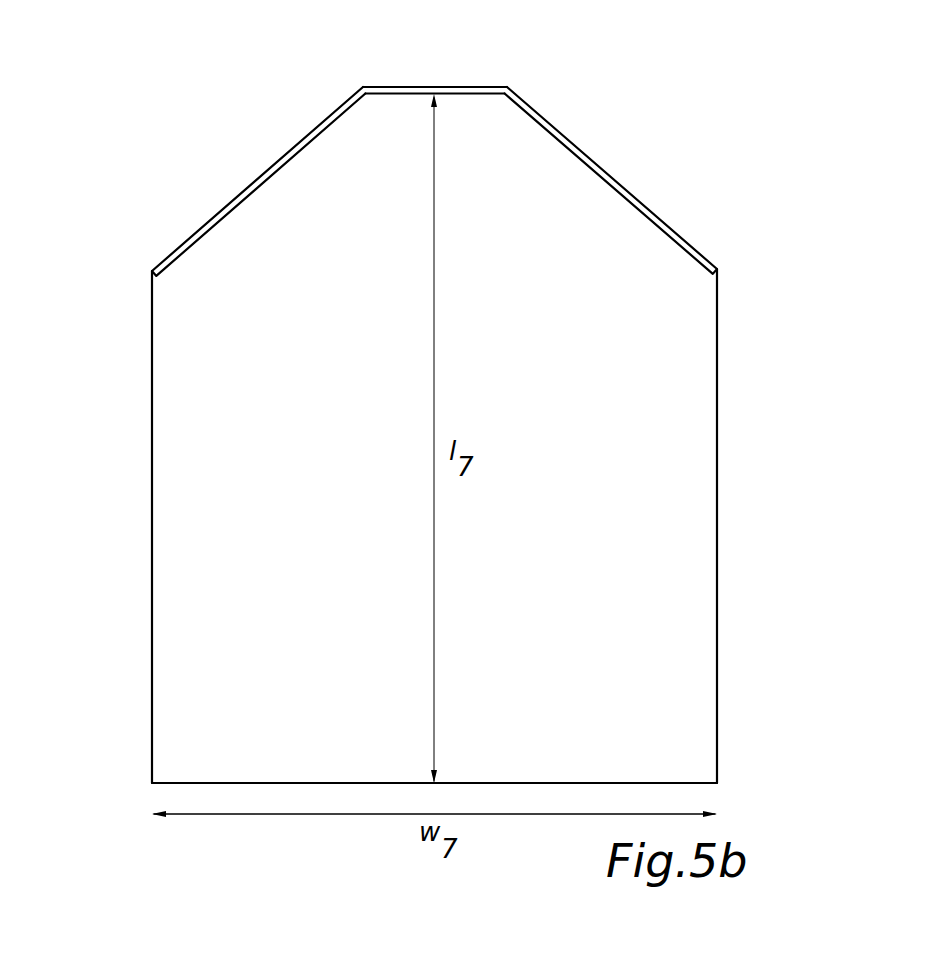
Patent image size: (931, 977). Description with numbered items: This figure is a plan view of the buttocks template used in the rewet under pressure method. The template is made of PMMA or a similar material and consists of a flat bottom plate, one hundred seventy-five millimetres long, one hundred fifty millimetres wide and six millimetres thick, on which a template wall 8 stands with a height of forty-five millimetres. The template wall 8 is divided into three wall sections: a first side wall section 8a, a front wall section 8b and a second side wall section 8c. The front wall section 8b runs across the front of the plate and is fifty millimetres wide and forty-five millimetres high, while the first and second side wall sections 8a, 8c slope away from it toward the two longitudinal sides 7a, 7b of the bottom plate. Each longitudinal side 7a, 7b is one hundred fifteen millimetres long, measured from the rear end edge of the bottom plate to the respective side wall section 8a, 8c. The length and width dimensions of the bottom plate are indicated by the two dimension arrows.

The longitudinal side 7a is at (717, 495).
The longitudinal side 7b is at (152, 503).
The template wall 8 is at (434, 142).
The first side wall section 8a is at (563, 133).
The front wall section 8b is at (450, 86).
The second side wall section 8c is at (258, 177).